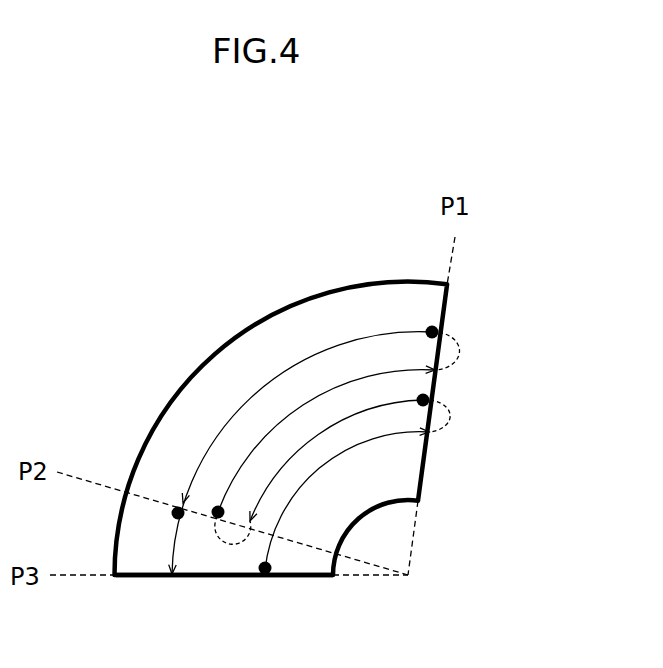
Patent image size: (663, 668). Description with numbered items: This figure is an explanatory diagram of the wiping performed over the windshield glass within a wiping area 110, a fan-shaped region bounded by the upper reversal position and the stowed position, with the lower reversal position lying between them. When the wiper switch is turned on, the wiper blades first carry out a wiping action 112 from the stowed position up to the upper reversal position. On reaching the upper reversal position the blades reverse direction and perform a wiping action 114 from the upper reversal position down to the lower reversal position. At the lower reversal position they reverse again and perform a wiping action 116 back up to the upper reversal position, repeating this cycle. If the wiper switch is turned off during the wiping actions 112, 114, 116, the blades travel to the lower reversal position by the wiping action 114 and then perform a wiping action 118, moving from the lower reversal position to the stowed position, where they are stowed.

The wiping area 110 is at (348, 281).
The wiping action 112 is at (376, 436).
The wiping action 114 is at (230, 418).
The wiping action 116 is at (283, 417).
The wiping action 118 is at (170, 550).